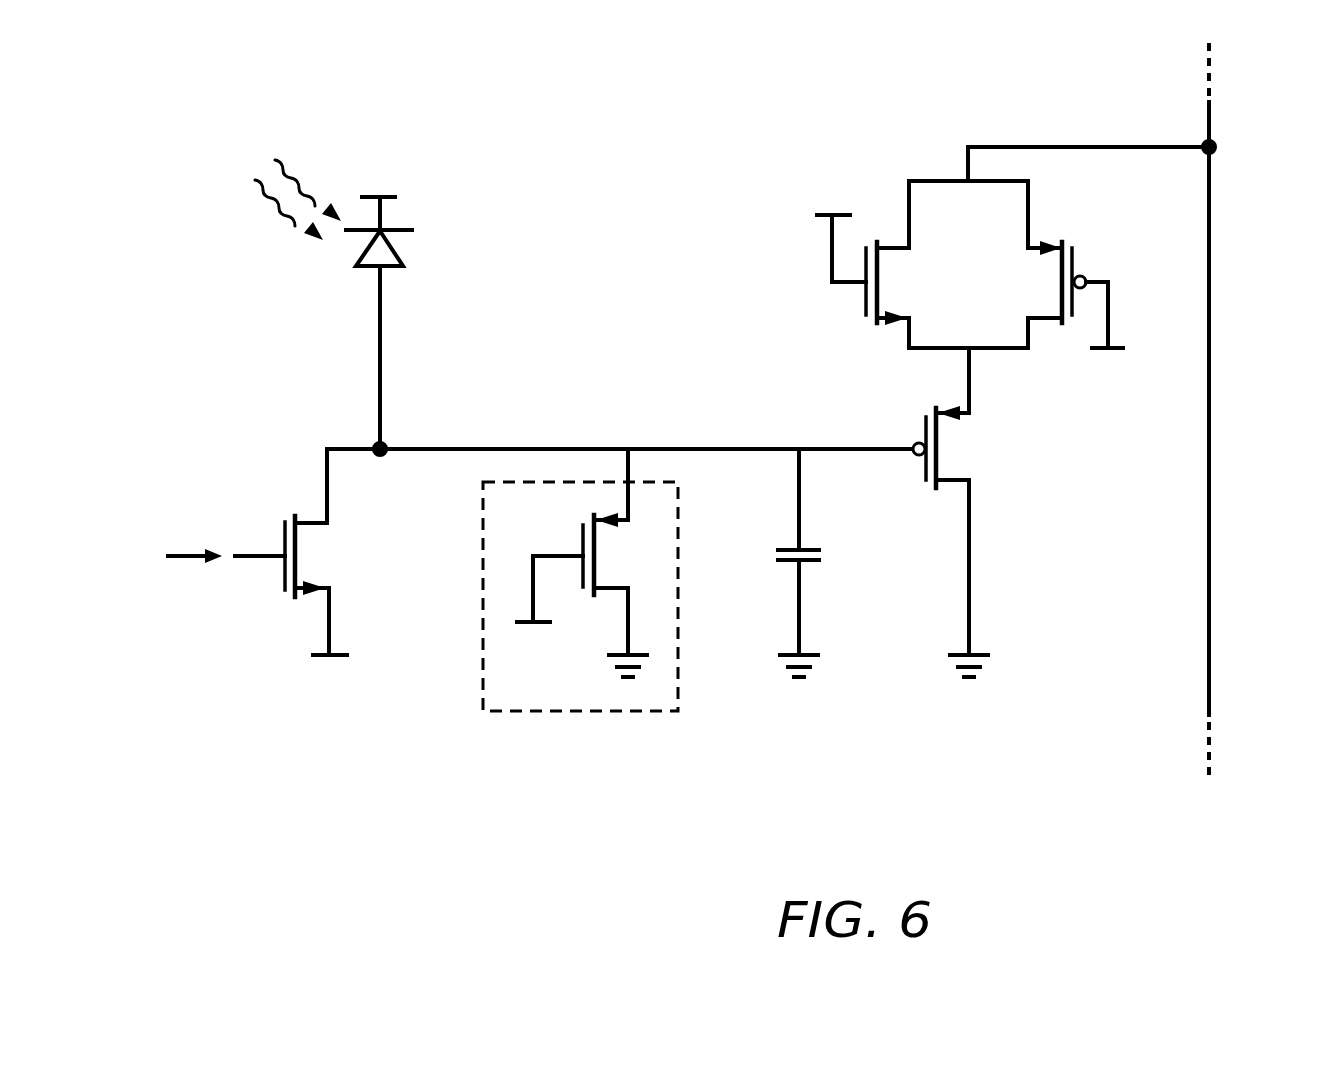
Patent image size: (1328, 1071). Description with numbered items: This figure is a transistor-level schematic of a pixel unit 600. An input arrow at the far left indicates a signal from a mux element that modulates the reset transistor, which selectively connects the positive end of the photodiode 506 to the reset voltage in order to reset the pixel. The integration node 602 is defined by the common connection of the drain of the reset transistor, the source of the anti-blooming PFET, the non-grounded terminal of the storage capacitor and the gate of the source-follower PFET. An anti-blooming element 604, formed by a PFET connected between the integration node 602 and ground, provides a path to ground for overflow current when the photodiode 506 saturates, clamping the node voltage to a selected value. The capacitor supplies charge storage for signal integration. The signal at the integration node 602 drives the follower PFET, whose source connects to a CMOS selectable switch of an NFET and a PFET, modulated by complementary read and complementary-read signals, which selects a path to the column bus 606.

The photodiode 506 is at (373, 268).
The pixel unit 600 is at (700, 454).
The integration node 602 is at (381, 454).
The anti-blooming element 604 is at (602, 720).
The column bus 606 is at (1211, 630).